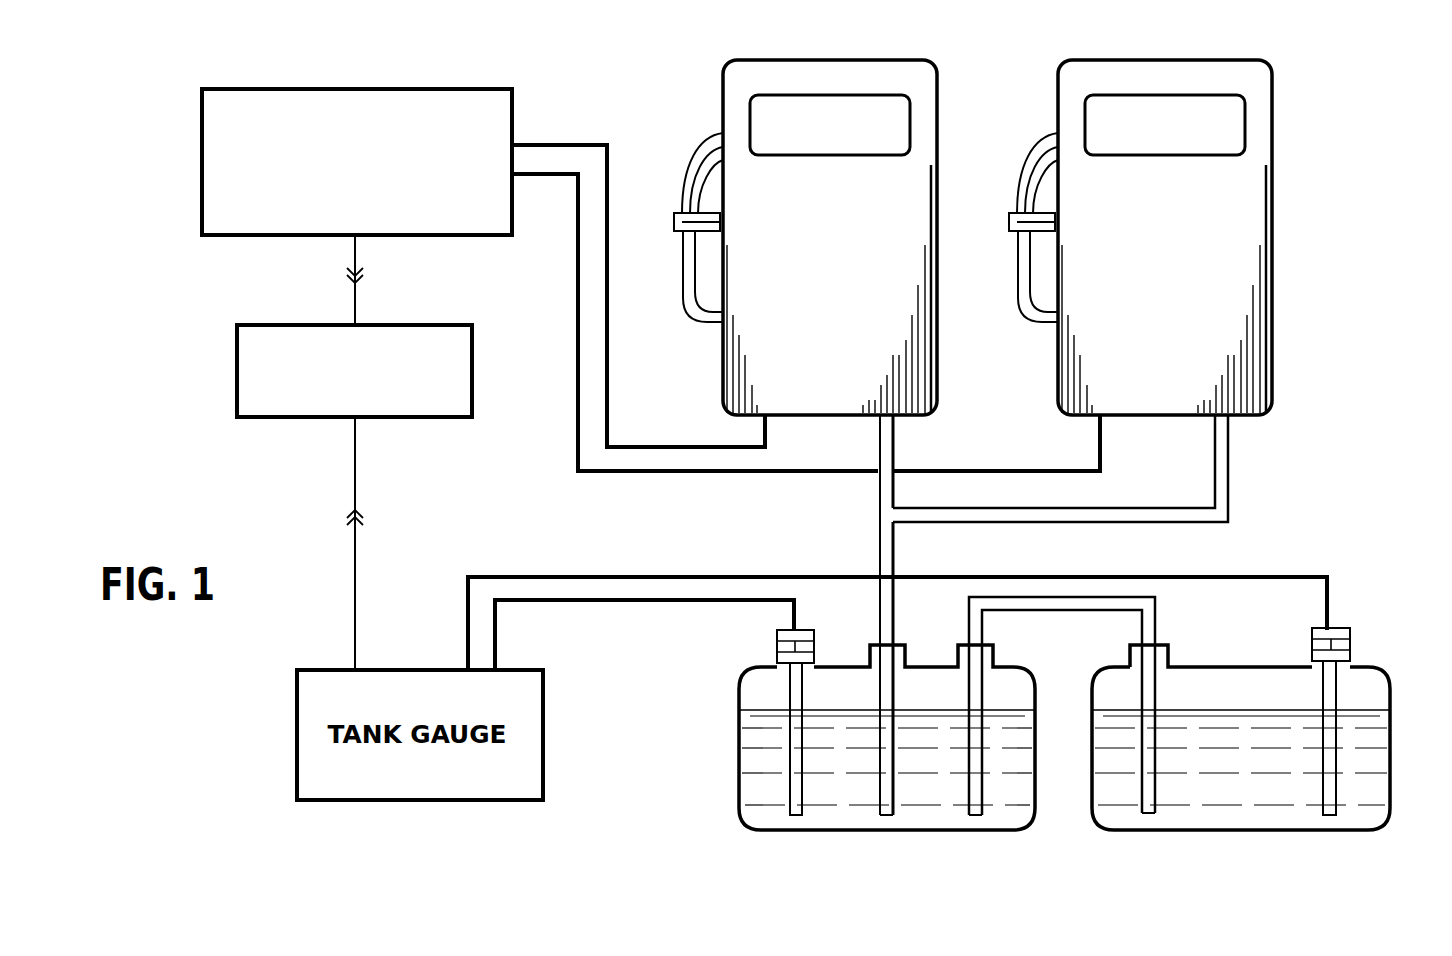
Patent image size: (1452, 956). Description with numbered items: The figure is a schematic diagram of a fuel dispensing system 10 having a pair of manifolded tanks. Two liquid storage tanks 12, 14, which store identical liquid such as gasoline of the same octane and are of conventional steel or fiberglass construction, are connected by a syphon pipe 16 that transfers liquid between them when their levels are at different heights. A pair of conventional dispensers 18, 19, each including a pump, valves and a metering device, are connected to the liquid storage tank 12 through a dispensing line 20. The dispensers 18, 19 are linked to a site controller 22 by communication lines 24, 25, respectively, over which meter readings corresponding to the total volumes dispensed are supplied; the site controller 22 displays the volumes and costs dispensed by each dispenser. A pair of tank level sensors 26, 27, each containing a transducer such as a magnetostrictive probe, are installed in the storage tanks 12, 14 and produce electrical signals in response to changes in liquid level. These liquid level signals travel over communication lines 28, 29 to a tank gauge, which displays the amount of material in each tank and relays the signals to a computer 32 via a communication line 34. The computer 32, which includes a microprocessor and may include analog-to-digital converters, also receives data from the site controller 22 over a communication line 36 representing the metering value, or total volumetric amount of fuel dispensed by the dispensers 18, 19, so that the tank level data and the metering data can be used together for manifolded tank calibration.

The fuel dispensing system 10 is at (1288, 120).
The liquid storage tank 12 is at (739, 770).
The liquid storage tank 14 is at (1212, 667).
The syphon pipe 16 is at (1032, 612).
The dispenser 18 is at (723, 90).
The dispenser 19 is at (1058, 90).
The dispensing line 20 is at (879, 568).
The site controller 22 is at (325, 89).
The communication line 24 is at (563, 145).
The communication line 25 is at (562, 178).
The tank level sensor 26 is at (790, 683).
The tank level sensor 27 is at (1338, 680).
The communication line 28 is at (655, 601).
The communication line 29 is at (545, 577).
The computer 32 is at (418, 417).
The communication line 34 is at (352, 560).
The communication line 36 is at (353, 313).